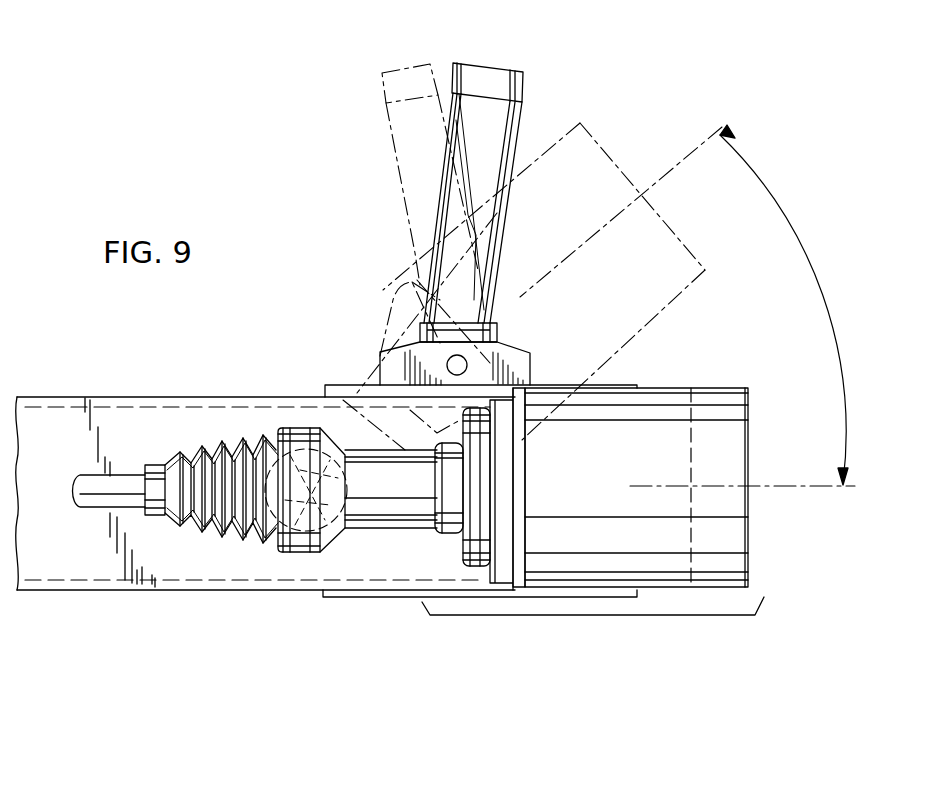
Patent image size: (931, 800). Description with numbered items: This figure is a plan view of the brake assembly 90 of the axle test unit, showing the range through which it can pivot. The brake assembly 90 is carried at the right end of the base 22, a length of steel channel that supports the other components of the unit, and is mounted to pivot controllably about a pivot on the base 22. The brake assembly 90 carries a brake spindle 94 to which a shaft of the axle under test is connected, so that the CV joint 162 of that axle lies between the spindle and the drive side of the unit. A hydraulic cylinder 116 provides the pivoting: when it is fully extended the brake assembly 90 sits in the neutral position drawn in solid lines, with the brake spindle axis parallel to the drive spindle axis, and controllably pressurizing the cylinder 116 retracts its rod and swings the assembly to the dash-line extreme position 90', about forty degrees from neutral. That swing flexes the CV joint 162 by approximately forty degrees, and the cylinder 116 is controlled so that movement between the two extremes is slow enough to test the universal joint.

The base 22 is at (118, 591).
The CV joint 162 is at (293, 433).
The brake spindle 94 is at (403, 517).
The brake assembly 90 is at (589, 523).
The brake assembly in pivoted extreme position 90' is at (595, 304).
The hydraulic cylinder 116 is at (507, 122).